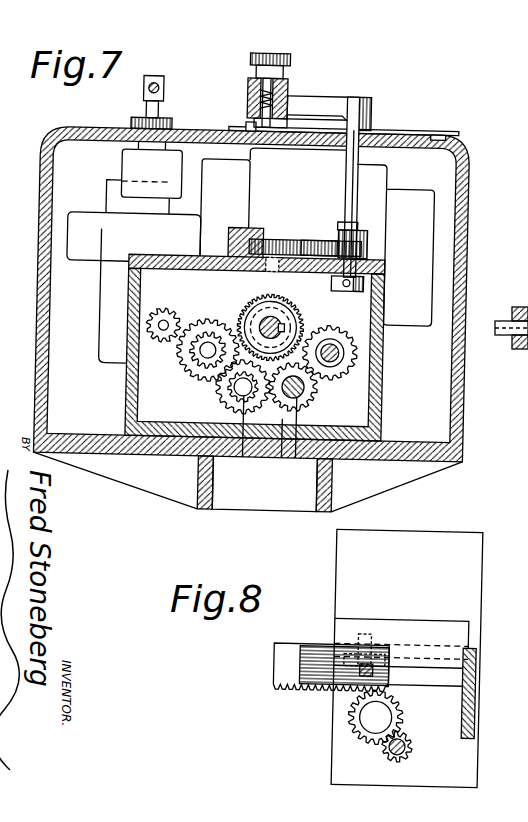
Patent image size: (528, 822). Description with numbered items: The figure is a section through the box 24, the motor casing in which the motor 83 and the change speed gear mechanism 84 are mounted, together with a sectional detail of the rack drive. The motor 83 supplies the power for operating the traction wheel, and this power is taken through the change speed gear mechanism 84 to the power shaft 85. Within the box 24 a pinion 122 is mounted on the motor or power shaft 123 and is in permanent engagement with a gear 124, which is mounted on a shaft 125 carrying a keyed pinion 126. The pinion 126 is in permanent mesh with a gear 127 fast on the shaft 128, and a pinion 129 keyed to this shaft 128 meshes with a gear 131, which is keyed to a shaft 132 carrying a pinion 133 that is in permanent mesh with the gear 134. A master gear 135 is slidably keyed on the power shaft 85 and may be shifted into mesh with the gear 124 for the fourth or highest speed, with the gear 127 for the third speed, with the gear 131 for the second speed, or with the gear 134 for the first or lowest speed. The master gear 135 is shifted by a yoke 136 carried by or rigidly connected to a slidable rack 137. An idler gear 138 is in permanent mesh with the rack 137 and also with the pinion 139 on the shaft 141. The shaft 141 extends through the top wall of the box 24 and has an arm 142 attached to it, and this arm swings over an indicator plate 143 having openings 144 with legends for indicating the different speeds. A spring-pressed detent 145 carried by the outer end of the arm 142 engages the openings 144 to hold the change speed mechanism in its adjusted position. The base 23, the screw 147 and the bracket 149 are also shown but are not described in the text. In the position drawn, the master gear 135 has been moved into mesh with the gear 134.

In FIG. 7, the base foot 23 is at (203, 510).
In FIG. 7, the box 24 is at (465, 174).
In FIG. 7, the motor 83 is at (420, 270).
In FIG. 7, the change speed gear mechanism 84 is at (153, 293).
In FIG. 7, the power shaft 85 is at (283, 321).
In FIG. 7, the pinion 122 is at (160, 327).
In FIG. 7, the motor or power shaft 123 is at (148, 333).
In FIG. 7, the gear 124 is at (179, 356).
In FIG. 7, the shaft 125 is at (196, 361).
In FIG. 7, the pinion 126 is at (207, 358).
In FIG. 7, the gear 127 is at (219, 392).
In FIG. 7, the shaft 128 is at (233, 393).
In FIG. 7, the pinion 129 is at (246, 457).
In FIG. 7, the gear 131 is at (285, 457).
In FIG. 7, the shaft 132 is at (299, 457).
In FIG. 7, the pinion 133 is at (307, 394).
In FIG. 7, the gear 134 is at (348, 375).
In FIG. 7, the master gear 135 is at (239, 301).
In FIG. 7, the yoke 136 is at (265, 272).
In FIG. 8, the yoke 136 is at (370, 636).
In FIG. 7, the slidable rack 137 is at (281, 239).
In FIG. 8, the slidable rack 137 is at (283, 671).
In FIG. 7, the idler gear 138 is at (318, 239).
In FIG. 8, the idler gear 138 is at (351, 719).
In FIG. 7, the pinion 139 is at (366, 240).
In FIG. 8, the pinion 139 is at (385, 749).
In FIG. 7, the shaft 141 is at (343, 176).
In FIG. 8, the shaft 141 is at (396, 760).
In FIG. 7, the arm 142 is at (309, 95).
In FIG. 7, the indicator plate 143 is at (403, 126).
In FIG. 7, the openings 144 is at (434, 131).
In FIG. 7, the spring-pressed detent 145 is at (275, 53).
In FIG. 7, the screw 147 is at (142, 113).
In FIG. 7, the bracket 149 is at (150, 87).